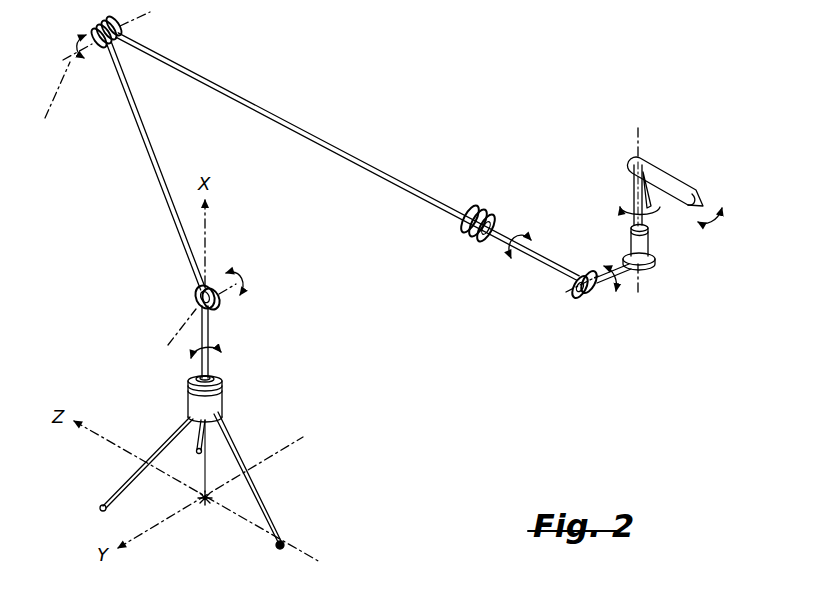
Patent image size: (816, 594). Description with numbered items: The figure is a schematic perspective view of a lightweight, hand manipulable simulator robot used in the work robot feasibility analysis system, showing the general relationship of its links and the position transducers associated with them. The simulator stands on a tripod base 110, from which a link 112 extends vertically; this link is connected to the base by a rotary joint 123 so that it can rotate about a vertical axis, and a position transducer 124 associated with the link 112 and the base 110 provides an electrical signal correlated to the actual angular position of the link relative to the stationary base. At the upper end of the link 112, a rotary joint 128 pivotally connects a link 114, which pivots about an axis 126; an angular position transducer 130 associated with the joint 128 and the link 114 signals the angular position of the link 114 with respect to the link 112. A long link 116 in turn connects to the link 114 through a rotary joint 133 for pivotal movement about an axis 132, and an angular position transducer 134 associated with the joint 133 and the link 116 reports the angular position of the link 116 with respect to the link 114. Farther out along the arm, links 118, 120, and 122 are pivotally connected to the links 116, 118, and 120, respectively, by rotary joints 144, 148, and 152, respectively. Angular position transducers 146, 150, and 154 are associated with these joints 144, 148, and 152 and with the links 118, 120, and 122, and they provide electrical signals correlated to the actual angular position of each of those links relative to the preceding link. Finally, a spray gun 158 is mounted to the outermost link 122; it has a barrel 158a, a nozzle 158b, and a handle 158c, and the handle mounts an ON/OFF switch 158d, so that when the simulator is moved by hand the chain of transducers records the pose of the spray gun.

The tripod base 110 is at (240, 424).
The link 112 is at (211, 336).
The link 114 is at (150, 151).
The link 116 is at (324, 140).
The link 118 is at (540, 262).
The link 120 is at (617, 286).
The link 122 is at (652, 238).
The rotary joint 123 is at (216, 390).
The position transducer 124 is at (214, 371).
The axis 126 is at (180, 325).
The rotary joint 128 is at (217, 283).
The angular position transducer 130 is at (196, 300).
The axis 132 is at (49, 102).
The rotary joint 133 is at (124, 31).
The angular position transducer 134 is at (110, 48).
The rotary joint 144 is at (477, 211).
The angular position transducer 146 is at (473, 240).
The rotary joint 148 is at (587, 300).
The angular position transducer 150 is at (578, 298).
The rotary joint 152 is at (651, 269).
The angular position transducer 154 is at (656, 264).
The spray gun 158 is at (677, 147).
The barrel 158a is at (667, 181).
The nozzle 158b is at (705, 197).
The handle 158c is at (631, 182).
The ON/OFF switch 158d is at (626, 211).